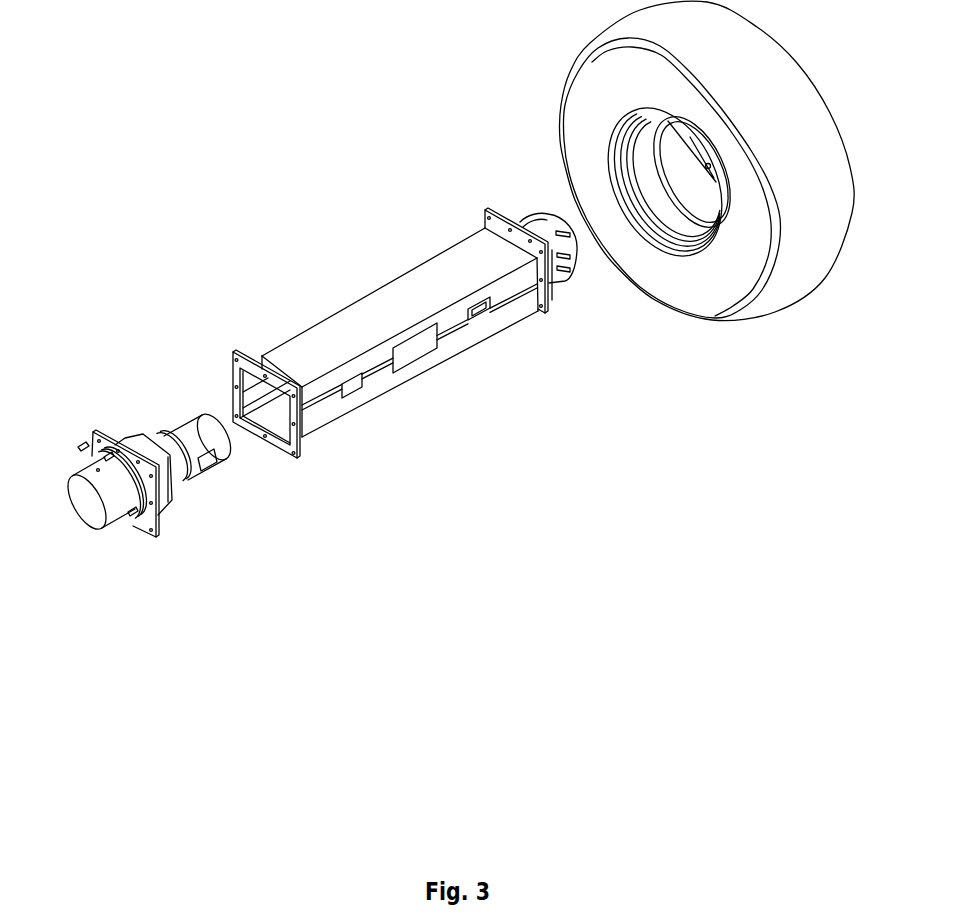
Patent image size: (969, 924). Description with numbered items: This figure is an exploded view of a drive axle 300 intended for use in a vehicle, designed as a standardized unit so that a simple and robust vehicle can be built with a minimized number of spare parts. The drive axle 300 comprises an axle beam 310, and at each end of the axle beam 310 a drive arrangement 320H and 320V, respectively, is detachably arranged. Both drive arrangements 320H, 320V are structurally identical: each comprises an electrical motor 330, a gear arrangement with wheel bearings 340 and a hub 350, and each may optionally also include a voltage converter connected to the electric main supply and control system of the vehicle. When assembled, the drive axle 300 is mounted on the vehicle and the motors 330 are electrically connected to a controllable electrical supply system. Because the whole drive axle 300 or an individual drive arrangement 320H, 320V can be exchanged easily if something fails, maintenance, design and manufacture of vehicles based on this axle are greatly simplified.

The drive axle 300 is at (216, 79).
The axle beam 310 is at (377, 300).
The drive arrangement 320H is at (500, 172).
The drive arrangement 320V is at (149, 375).
The electrical motor 330 is at (232, 445).
The gear arrangement with wheel bearings 340 is at (176, 485).
The hub 350 is at (95, 512).